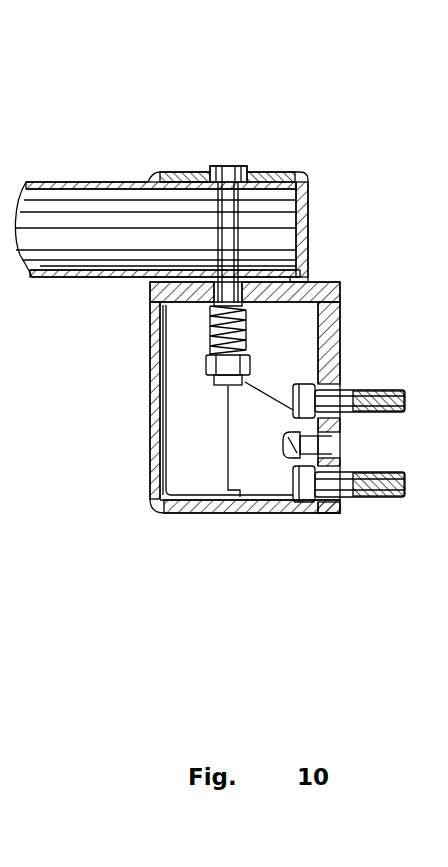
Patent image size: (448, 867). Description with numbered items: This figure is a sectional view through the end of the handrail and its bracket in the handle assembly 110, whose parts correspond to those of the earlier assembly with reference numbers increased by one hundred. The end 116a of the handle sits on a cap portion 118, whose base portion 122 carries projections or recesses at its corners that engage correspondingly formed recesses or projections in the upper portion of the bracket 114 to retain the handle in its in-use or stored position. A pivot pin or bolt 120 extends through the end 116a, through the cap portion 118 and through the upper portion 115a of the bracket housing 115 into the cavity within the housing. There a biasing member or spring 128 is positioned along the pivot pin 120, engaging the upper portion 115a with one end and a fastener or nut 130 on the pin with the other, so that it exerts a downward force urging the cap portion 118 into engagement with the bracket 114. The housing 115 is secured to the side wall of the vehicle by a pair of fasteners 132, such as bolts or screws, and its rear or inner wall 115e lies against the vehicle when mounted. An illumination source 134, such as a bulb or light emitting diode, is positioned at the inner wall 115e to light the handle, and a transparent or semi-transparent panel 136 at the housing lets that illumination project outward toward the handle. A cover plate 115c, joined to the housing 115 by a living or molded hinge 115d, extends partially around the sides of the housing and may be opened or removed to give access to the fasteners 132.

The handle assembly 110 is at (57, 143).
The end of handle 116a is at (172, 208).
The cap portion 118 is at (300, 172).
The pivot pin 120 is at (243, 218).
The base portion of cap portion 122 is at (298, 267).
The biasing member 128 is at (208, 322).
The nut 130 is at (246, 366).
The fasteners 132 is at (363, 390).
The illumination source 134 is at (305, 444).
The transparent panel 136 is at (148, 392).
The bracket 114 is at (146, 531).
The bracket housing 115 is at (274, 521).
The upper portion of bracket housing 115a is at (325, 290).
The cover plate 115c is at (148, 470).
The hinge 115d is at (225, 515).
The inner wall of housing 115e is at (320, 338).